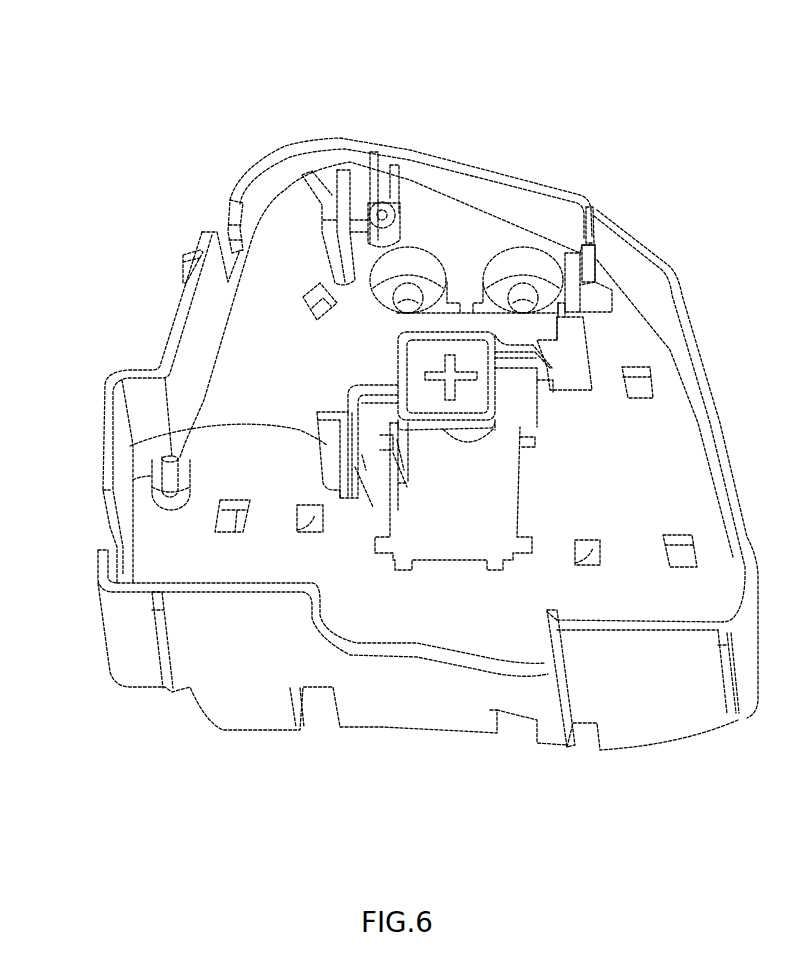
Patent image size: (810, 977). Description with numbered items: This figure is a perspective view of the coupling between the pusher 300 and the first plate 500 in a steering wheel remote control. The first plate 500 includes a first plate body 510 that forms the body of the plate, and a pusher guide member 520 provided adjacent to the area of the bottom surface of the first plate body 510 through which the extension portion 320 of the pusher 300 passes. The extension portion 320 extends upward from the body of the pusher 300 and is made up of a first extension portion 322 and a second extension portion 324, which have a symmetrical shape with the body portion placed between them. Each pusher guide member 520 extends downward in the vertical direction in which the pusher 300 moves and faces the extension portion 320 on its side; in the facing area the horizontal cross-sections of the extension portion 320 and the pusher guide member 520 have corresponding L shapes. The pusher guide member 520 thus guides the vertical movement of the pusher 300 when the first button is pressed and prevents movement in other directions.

The first plate 500 is at (452, 128).
The first plate body 510 is at (678, 458).
The pusher guide member 520 is at (140, 446).
The pusher 300 is at (433, 436).
The extension portion 320 is at (697, 75).
The first extension portion 322 is at (361, 470).
The second extension portion 324 is at (573, 355).